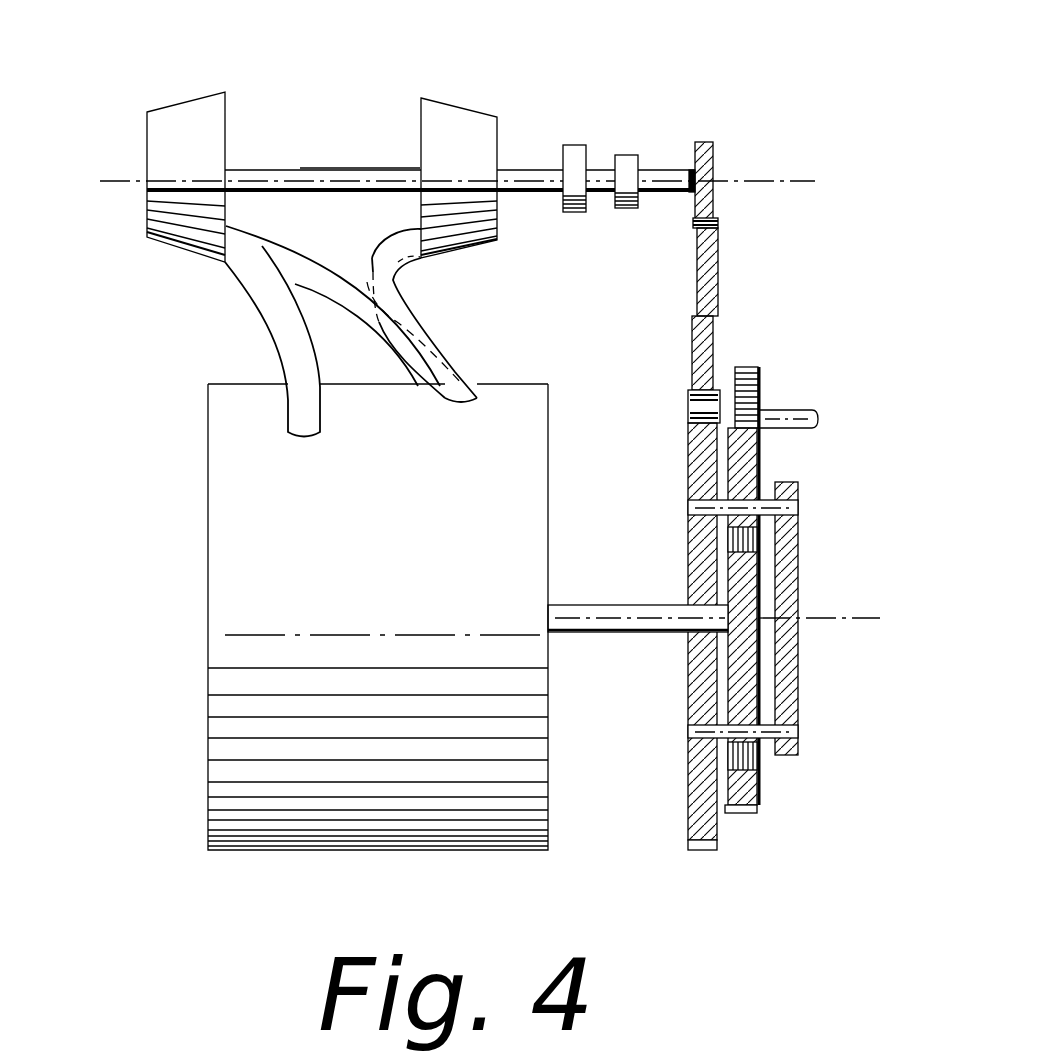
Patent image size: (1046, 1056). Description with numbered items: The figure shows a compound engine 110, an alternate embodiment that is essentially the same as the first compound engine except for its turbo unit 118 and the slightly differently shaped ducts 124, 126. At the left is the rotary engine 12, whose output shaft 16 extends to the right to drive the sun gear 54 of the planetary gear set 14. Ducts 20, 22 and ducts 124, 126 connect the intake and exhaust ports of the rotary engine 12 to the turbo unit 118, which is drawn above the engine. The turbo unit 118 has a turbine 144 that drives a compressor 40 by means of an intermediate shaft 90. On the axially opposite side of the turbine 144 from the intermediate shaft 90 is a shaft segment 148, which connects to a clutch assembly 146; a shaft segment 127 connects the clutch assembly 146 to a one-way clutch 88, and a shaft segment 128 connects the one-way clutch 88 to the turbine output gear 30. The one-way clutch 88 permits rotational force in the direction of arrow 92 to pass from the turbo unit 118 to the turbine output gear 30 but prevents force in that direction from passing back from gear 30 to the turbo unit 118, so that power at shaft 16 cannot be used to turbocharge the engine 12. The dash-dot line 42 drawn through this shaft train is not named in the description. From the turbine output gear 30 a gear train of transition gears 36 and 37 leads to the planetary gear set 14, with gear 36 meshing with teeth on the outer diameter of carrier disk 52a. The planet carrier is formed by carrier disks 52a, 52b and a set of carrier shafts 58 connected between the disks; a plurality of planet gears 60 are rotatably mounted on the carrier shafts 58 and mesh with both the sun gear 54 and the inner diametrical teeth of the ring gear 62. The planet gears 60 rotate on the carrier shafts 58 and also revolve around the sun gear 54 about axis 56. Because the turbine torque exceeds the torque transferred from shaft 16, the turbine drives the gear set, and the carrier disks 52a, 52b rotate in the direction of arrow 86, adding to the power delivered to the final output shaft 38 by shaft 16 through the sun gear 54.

The rotary engine 12 is at (205, 383).
The planetary gear set 14 is at (688, 707).
The output shaft 16 is at (640, 634).
The duct 20 is at (275, 327).
The duct 22 is at (302, 263).
The turbine output gear 30 is at (700, 145).
The transition gear 36 is at (700, 335).
The transition gear 37 is at (718, 262).
The final output shaft 38 is at (813, 410).
The compressor 40 is at (190, 112).
The axis 42 is at (797, 174).
The carrier disk 52a is at (692, 458).
The carrier disk 52b is at (800, 484).
The sun gear 54 is at (748, 575).
The axis 56 is at (822, 620).
The carrier shaft 58 is at (792, 508).
The planet gear 60 is at (750, 528).
The ring gear 62 is at (757, 806).
The arrow 86 is at (588, 655).
The one-way clutch 88 is at (628, 155).
The intermediate shaft 90 is at (312, 172).
The arrow 92 is at (672, 210).
The compound engine 110 is at (165, 772).
The turbo unit 118 is at (360, 165).
The duct 124 is at (330, 355).
The duct 126 is at (403, 355).
The shaft segment 127 is at (598, 215).
The shaft segment 128 is at (640, 212).
The turbine 144 is at (470, 117).
The clutch assembly 146 is at (573, 142).
The shaft segment 148 is at (533, 195).